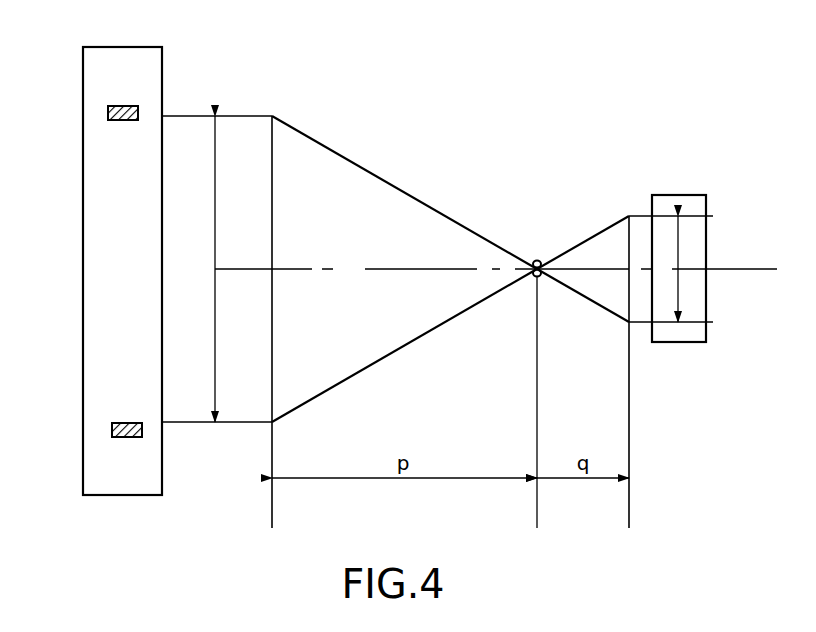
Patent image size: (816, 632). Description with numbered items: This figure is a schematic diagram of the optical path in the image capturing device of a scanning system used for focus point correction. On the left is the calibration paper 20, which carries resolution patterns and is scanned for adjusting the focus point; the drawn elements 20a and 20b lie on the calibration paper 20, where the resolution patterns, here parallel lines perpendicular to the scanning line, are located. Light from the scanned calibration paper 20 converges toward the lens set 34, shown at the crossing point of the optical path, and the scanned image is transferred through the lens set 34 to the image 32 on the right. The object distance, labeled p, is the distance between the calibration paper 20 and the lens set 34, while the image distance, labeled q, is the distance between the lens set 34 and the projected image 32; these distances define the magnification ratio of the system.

The calibration paper 20 is at (124, 47).
The first light emitting element 20a is at (108, 113).
The second light emitting element 20b is at (112, 430).
The lens set 34 is at (537, 248).
The image 32 is at (680, 195).